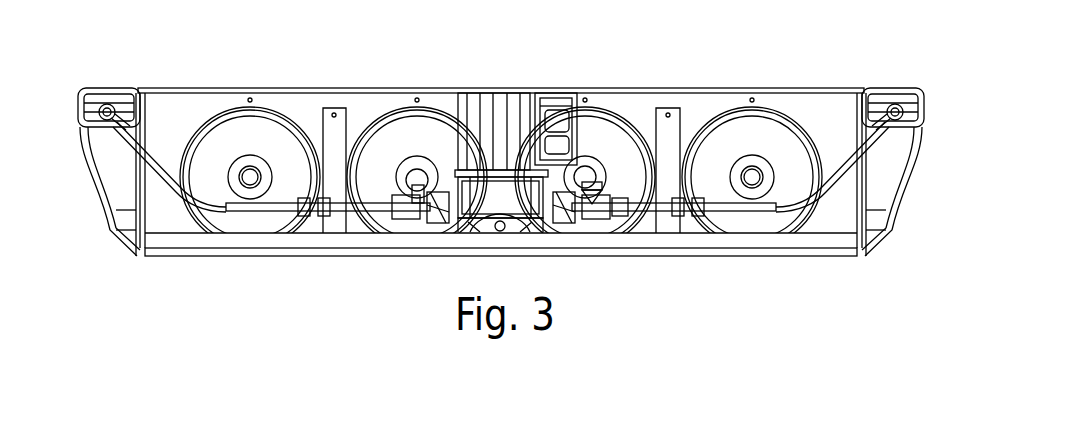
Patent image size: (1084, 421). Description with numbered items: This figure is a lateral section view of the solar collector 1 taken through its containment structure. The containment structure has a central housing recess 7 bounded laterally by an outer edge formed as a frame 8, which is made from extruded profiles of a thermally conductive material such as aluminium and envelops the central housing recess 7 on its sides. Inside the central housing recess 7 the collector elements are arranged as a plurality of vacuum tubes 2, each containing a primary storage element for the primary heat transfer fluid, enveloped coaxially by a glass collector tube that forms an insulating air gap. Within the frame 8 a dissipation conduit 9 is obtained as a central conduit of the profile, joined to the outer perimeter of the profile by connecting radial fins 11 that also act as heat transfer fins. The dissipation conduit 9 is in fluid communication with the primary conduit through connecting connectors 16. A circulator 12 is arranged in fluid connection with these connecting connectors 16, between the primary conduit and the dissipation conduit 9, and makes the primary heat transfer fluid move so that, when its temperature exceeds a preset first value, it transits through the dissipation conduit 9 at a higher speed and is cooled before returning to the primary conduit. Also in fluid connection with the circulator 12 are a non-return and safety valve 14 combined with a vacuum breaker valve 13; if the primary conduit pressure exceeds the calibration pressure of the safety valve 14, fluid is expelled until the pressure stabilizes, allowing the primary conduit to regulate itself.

The solar collector 1 is at (600, 62).
The vacuum tube 2 is at (364, 106).
The central housing recess 7 is at (651, 121).
The frame 8 is at (95, 158).
The dissipation conduit 9 is at (106, 104).
The connecting radial fins 11 is at (96, 97).
The circulator 12 is at (473, 202).
The vacuum breaker valve 13 is at (614, 212).
The non-return and safety valve 14 is at (408, 220).
The connecting connectors 16 is at (183, 198).